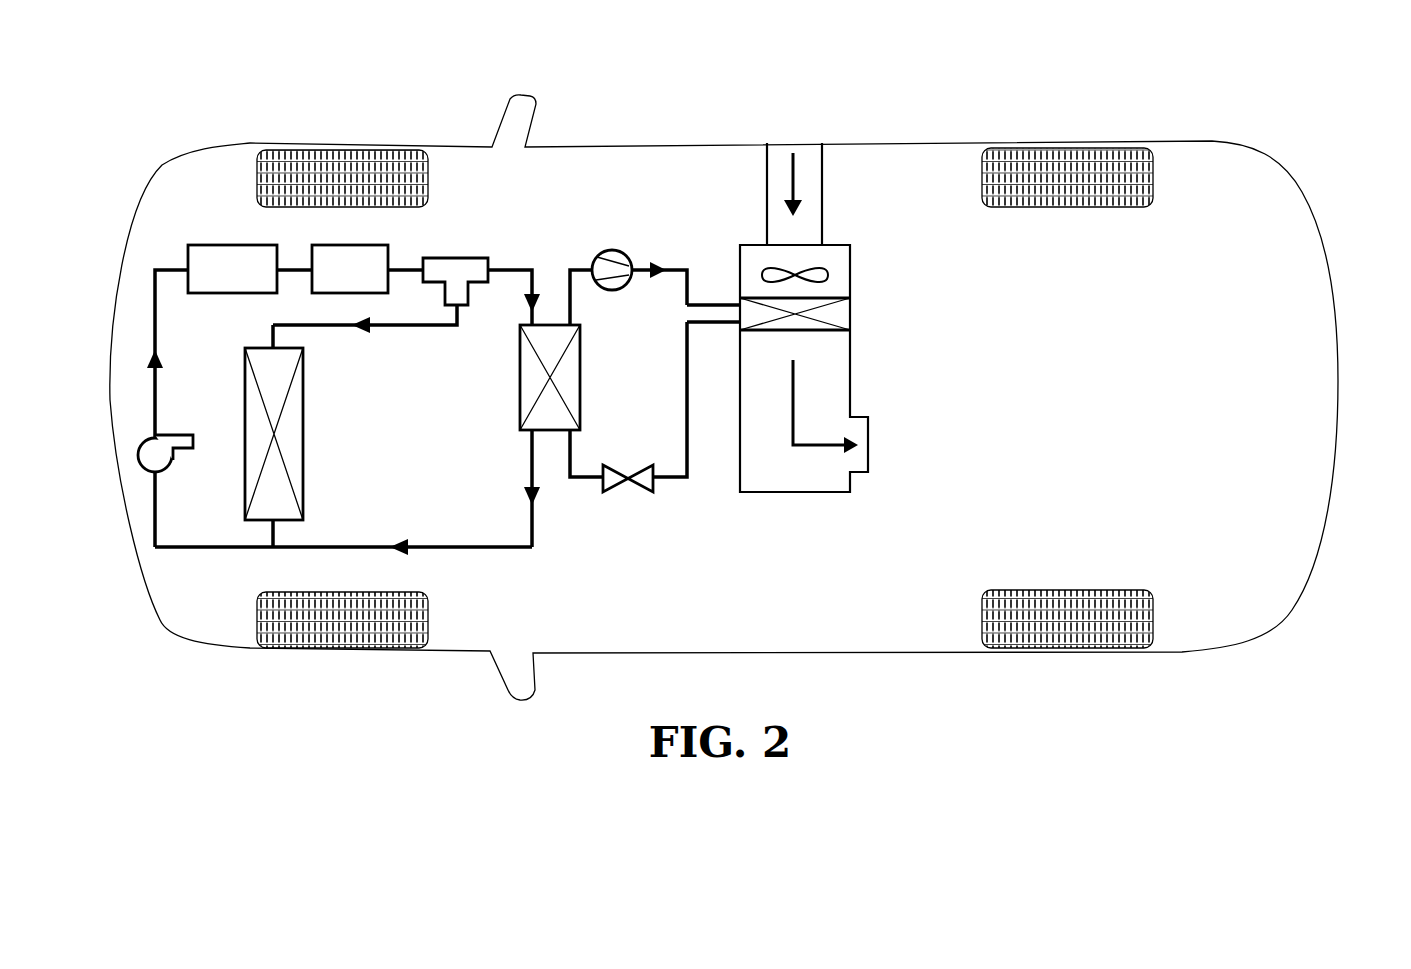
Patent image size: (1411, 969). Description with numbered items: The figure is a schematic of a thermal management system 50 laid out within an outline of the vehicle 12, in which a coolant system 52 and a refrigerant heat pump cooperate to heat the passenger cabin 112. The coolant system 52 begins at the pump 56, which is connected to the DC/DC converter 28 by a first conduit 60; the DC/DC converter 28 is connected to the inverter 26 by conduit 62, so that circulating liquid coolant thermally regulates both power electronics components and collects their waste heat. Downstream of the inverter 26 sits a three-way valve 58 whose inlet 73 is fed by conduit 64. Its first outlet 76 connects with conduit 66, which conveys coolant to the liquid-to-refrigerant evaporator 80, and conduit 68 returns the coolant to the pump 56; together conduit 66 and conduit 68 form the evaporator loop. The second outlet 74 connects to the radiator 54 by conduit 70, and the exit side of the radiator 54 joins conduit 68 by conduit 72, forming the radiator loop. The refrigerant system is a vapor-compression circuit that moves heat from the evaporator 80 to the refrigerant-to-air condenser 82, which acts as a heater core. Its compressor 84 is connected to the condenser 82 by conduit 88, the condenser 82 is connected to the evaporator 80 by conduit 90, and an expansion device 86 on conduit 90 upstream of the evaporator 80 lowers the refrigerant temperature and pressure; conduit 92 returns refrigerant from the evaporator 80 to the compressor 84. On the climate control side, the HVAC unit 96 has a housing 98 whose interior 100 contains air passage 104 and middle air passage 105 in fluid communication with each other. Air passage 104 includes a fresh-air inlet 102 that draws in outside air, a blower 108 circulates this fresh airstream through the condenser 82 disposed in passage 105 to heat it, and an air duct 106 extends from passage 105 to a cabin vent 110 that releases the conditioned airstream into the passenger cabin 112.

The vehicle 12 is at (450, 147).
The inverter 26 is at (352, 244).
The DC/DC converter 28 is at (235, 244).
The thermal management system 50 is at (578, 205).
The coolant system 52 is at (466, 574).
The radiator 54 is at (290, 435).
The pump 56 is at (157, 453).
The valve 58 is at (455, 257).
The first conduit 60 is at (158, 330).
The conduit 62 is at (292, 269).
The conduit 64 is at (405, 275).
The conduit 66 is at (520, 269).
The conduit 68 is at (540, 522).
The conduit 70 is at (400, 329).
The conduit 72 is at (273, 525).
The inlet 73 is at (430, 270).
The second outlet 74 is at (458, 308).
The first outlet 76 is at (497, 269).
The liquid-to-refrigerant heat exchanger (evaporator) 80 is at (522, 378).
The refrigerant-to-air heat exchanger (condenser) 82 is at (840, 313).
The compressor 84 is at (612, 252).
The expansion device 86 is at (618, 468).
The conduit 88 is at (645, 270).
The conduit 90 is at (687, 358).
The conduit 92 is at (575, 295).
The HVAC unit 96 is at (790, 494).
The housing 98 is at (855, 355).
The interior 100 is at (868, 420).
The fresh-air inlet 102 is at (808, 143).
The air passage 104 is at (822, 190).
The air passage 105 is at (758, 366).
The air duct 106 is at (856, 472).
The blower 108 is at (835, 270).
The cabin vent 110 is at (872, 440).
The passenger cabin 112 is at (1273, 562).